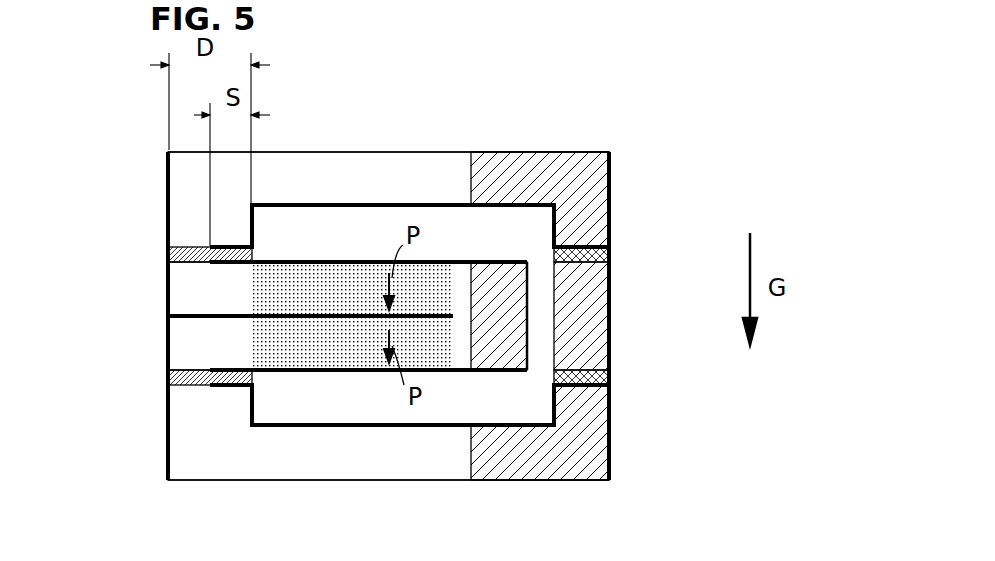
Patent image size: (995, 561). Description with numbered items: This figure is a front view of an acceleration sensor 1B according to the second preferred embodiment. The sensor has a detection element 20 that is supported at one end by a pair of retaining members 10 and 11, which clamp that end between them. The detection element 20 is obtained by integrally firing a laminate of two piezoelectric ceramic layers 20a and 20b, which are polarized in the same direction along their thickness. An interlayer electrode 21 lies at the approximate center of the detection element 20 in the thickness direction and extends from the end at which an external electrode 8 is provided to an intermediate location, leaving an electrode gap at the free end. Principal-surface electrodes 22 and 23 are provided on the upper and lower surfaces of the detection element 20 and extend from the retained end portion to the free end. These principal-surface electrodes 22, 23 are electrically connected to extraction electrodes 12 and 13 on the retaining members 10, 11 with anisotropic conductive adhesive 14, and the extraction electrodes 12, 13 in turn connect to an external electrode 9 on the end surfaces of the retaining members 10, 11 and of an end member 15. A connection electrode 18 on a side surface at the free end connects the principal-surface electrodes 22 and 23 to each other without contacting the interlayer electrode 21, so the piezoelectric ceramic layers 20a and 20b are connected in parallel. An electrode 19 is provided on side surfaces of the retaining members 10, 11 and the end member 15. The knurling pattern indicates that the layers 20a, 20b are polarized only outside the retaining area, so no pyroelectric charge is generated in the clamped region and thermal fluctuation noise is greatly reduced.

The acceleration sensor 1B is at (570, 132).
The external electrode 8 is at (166, 185).
The external electrode 9 is at (610, 190).
The retaining member 10 is at (309, 170).
The retaining member 11 is at (300, 467).
The extraction electrode 12 is at (376, 203).
The extraction electrode 13 is at (388, 427).
The anisotropic conductive adhesive 14 is at (166, 250).
The end member 15 is at (600, 315).
The connection electrode 18 is at (473, 292).
The electrode 19 is at (462, 165).
The detection element 20 is at (85, 272).
The piezoelectric ceramic layer 20a is at (182, 292).
The piezoelectric ceramic layer 20b is at (182, 344).
The interlayer electrode 21 is at (283, 312).
The principal-surface electrode 22 is at (338, 260).
The principal-surface electrode 23 is at (332, 372).